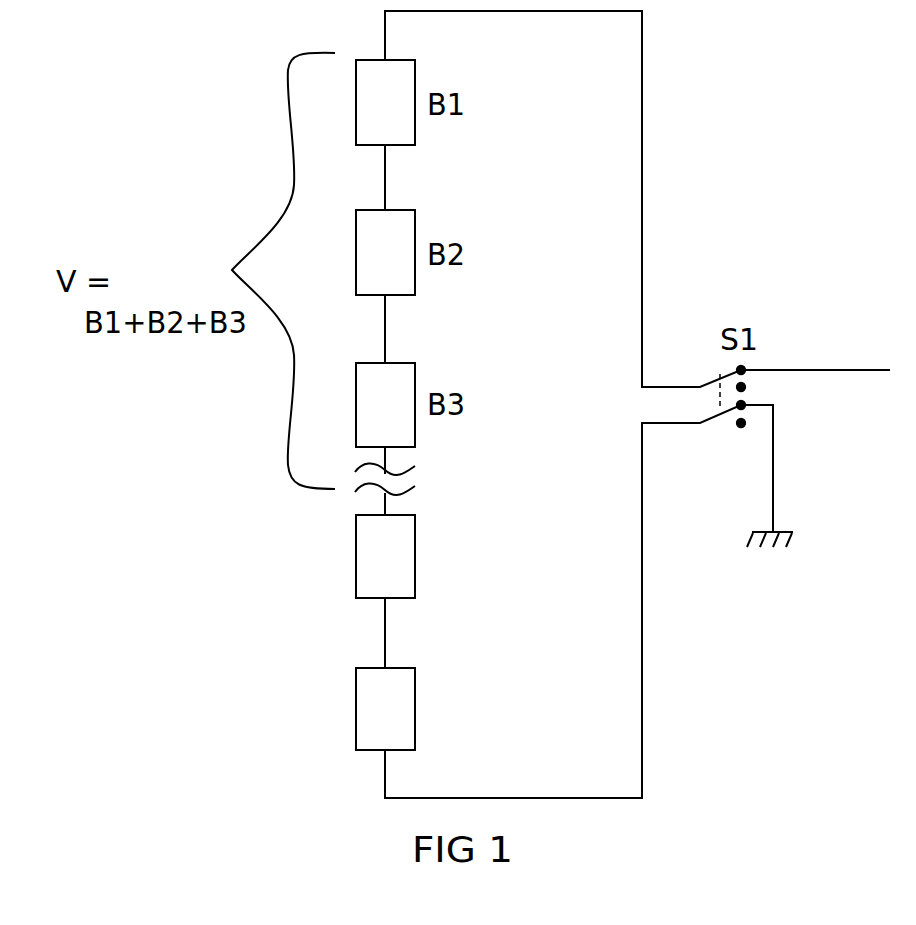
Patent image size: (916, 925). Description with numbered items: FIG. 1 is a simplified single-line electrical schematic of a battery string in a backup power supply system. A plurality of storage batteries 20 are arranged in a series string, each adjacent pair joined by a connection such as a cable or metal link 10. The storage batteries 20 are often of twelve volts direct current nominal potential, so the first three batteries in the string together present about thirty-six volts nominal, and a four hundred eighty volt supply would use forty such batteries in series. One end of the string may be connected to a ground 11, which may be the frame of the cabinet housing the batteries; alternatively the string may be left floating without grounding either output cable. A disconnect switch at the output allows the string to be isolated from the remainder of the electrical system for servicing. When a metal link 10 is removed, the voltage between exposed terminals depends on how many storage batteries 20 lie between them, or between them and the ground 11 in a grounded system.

The metal link 10 is at (385, 178).
The storage battery 20 is at (356, 557).
The ground 11 is at (780, 523).